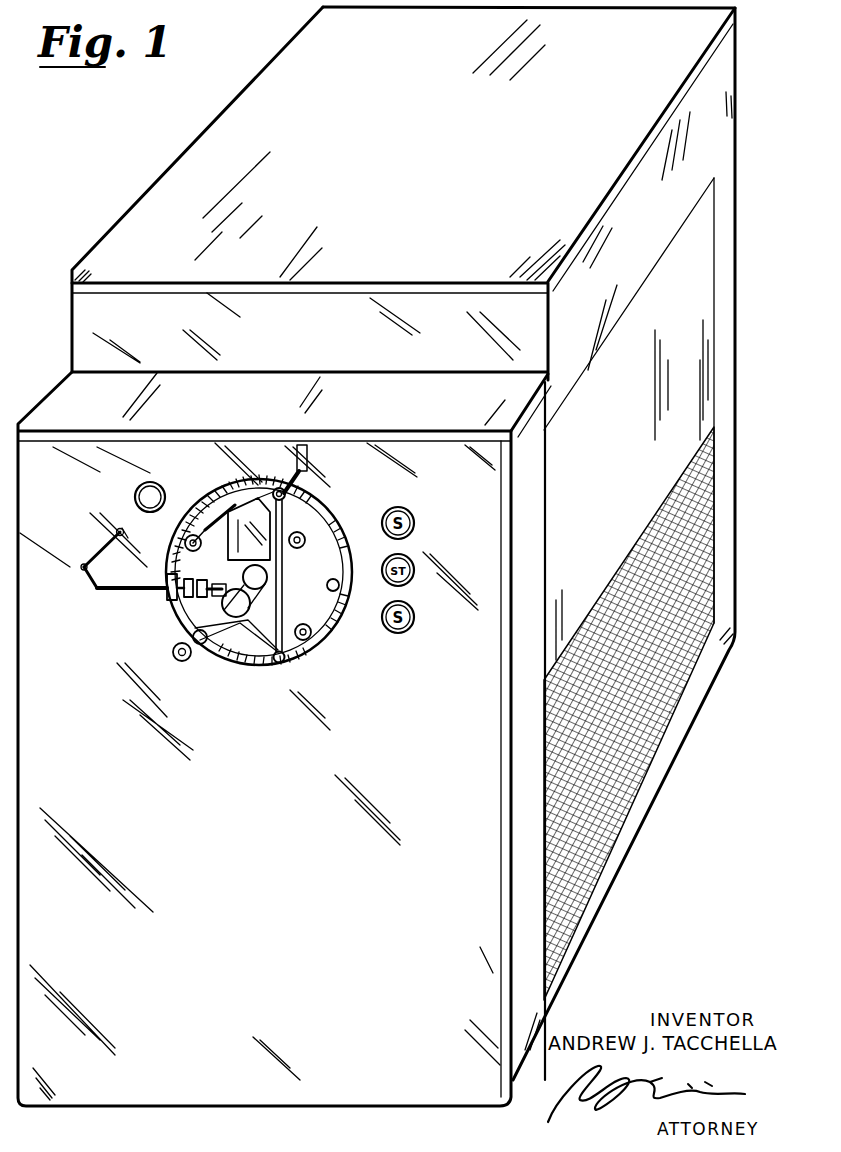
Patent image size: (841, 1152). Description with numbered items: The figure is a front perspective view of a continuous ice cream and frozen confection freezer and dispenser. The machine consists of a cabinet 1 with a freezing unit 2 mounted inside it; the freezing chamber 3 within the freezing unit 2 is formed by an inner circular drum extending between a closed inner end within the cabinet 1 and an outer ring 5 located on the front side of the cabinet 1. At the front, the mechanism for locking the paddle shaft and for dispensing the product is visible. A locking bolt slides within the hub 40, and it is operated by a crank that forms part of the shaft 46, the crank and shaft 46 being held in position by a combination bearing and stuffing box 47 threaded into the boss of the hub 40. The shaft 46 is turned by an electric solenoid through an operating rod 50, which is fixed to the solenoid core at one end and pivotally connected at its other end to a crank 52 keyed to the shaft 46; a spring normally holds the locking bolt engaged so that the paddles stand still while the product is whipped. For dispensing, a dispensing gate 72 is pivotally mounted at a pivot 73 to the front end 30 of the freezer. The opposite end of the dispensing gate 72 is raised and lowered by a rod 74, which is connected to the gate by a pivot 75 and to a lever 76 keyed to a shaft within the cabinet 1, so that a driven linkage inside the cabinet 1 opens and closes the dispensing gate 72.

The cabinet 1 is at (480, 1063).
The freezing unit 2 is at (621, 513).
The freezing chamber 3 is at (235, 166).
The outer ring 5 is at (317, 503).
The front end 30 is at (297, 590).
The hub 40 is at (252, 575).
The shaft 46 is at (132, 593).
The combination bearing and stuffing box 47 is at (200, 600).
The operating rod 50 is at (118, 545).
The crank 52 is at (93, 586).
The dispensing gate 72 is at (250, 663).
The pivot 73 is at (212, 665).
The rod 74 is at (284, 578).
The pivot 75 is at (286, 662).
The lever 76 is at (287, 483).